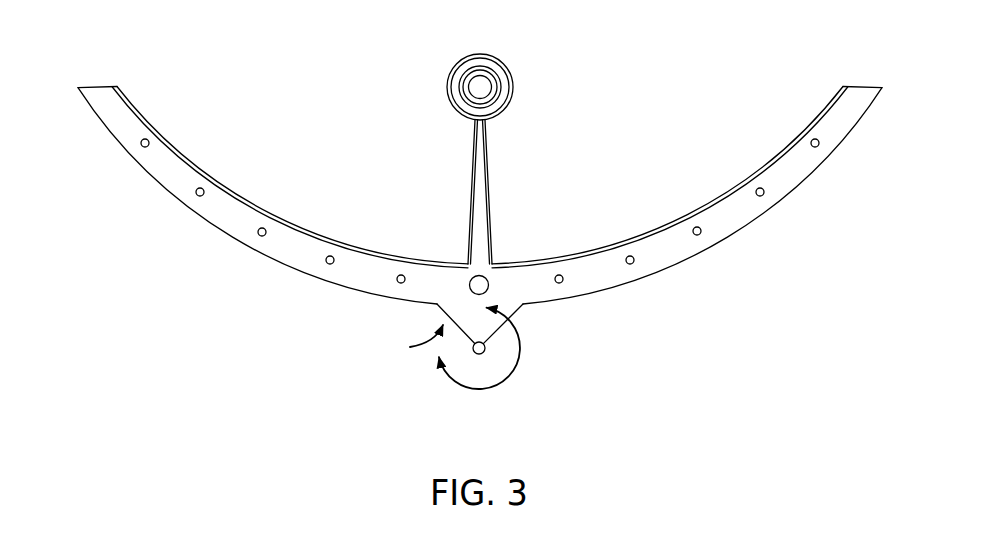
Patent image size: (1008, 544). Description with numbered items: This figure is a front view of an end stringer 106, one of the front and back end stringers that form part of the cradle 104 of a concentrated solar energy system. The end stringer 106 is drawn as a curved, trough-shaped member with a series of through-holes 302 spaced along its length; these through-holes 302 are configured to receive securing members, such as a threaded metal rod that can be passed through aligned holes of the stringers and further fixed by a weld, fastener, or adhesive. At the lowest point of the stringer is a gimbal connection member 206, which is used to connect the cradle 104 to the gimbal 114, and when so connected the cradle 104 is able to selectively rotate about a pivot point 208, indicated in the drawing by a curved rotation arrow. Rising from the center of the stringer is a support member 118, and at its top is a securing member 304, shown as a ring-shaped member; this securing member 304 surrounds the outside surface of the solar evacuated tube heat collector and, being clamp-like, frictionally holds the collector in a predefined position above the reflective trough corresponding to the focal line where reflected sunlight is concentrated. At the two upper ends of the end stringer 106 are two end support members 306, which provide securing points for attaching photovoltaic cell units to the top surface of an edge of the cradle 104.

The cradle 104 is at (479, 225).
The end stringer 106 is at (666, 253).
The gimbal 114 is at (487, 326).
The support member 118 is at (485, 205).
The gimbal connection member 206 is at (403, 343).
The pivot point 208 is at (501, 386).
The through-holes 302 is at (328, 263).
The securing member 304 is at (476, 54).
The end support members 306 is at (97, 87).